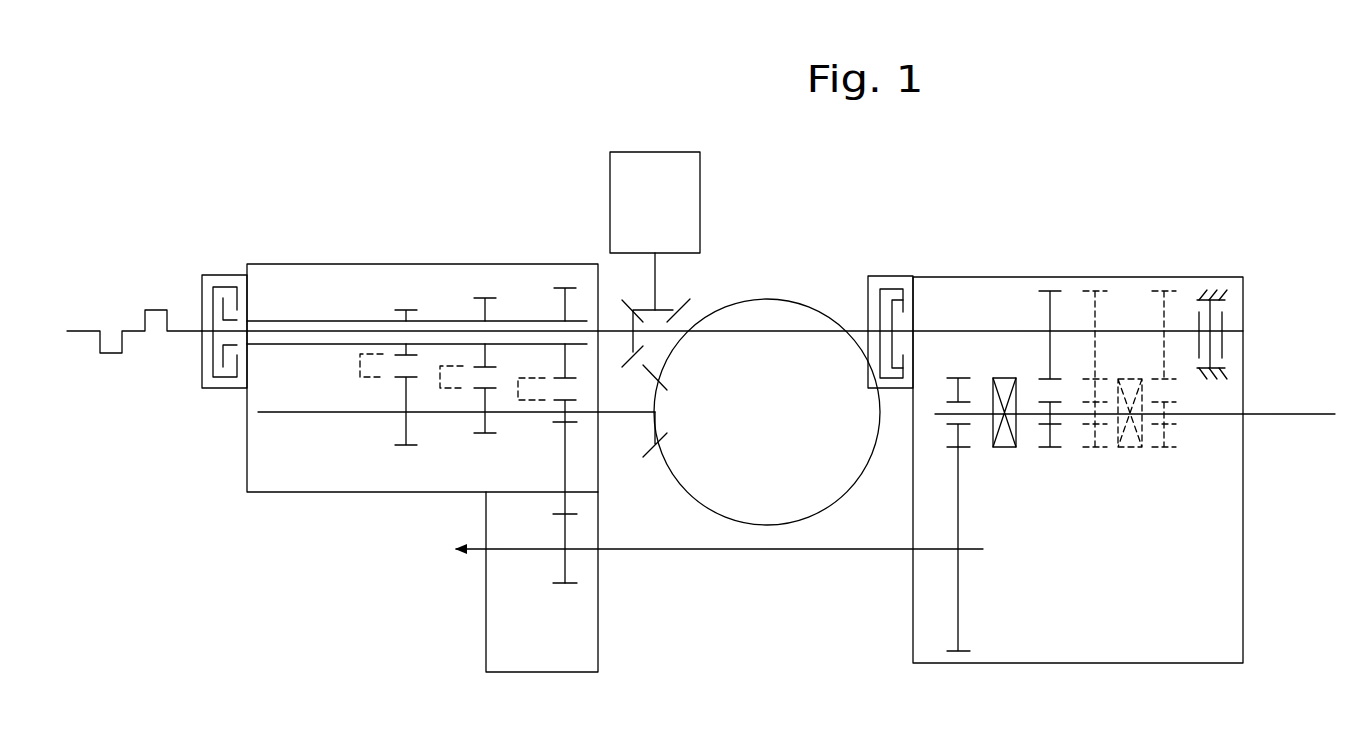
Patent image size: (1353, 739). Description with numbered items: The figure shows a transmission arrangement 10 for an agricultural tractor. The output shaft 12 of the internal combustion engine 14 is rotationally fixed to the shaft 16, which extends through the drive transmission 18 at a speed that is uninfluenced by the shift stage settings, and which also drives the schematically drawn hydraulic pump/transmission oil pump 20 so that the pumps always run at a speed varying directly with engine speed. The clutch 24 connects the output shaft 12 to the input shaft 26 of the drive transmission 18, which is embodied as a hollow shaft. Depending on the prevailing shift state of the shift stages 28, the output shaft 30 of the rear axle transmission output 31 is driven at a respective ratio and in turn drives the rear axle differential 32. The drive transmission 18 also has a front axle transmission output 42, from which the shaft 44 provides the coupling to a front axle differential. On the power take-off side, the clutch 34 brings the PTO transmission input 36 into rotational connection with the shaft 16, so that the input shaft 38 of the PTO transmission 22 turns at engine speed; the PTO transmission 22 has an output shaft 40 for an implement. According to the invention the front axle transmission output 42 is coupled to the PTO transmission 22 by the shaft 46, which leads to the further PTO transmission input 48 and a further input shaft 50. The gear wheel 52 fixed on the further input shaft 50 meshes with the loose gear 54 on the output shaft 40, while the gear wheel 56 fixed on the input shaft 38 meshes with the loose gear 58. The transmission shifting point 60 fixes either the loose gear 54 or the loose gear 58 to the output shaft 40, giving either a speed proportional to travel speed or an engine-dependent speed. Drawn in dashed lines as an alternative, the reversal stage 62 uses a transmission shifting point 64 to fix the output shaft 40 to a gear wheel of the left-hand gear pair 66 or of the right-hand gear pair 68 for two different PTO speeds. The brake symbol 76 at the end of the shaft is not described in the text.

The transmission arrangement 10 is at (729, 253).
The output shaft 12 is at (187, 335).
The internal combustion engine 14 is at (110, 313).
The shaft 16 is at (673, 333).
The drive transmission 18 is at (395, 262).
The hydraulic pump/transmission oil pump 20 is at (655, 231).
The PTO transmission 22 is at (1025, 268).
The clutch 24 is at (237, 276).
The input shaft 26 is at (299, 321).
The shift stages 28 is at (402, 303).
The output shaft 30 is at (625, 415).
The rear axle transmission output 31 is at (600, 412).
The rear axle differential 32 is at (767, 412).
The clutch 34 is at (888, 277).
The PTO transmission input 36 is at (918, 333).
The input shaft 38 is at (988, 333).
The output shaft 40 is at (1290, 412).
The front axle transmission output 42 is at (485, 633).
The shaft 44 is at (479, 550).
The shaft 46 is at (737, 553).
The further PTO transmission input 48 is at (913, 551).
The further input shaft 50 is at (937, 553).
The gear wheel 52 is at (960, 603).
The loose gear 54 is at (967, 392).
The gear wheel 56 is at (1050, 313).
The loose gear 58 is at (1057, 437).
The transmission shifting point 60 is at (1007, 458).
The reversal stage 62 is at (1134, 268).
The transmission shifting point 64 is at (1130, 455).
The left-hand gear pair 66 is at (1106, 290).
The right-hand gear pair 68 is at (1167, 290).
The brake 76 is at (1230, 278).